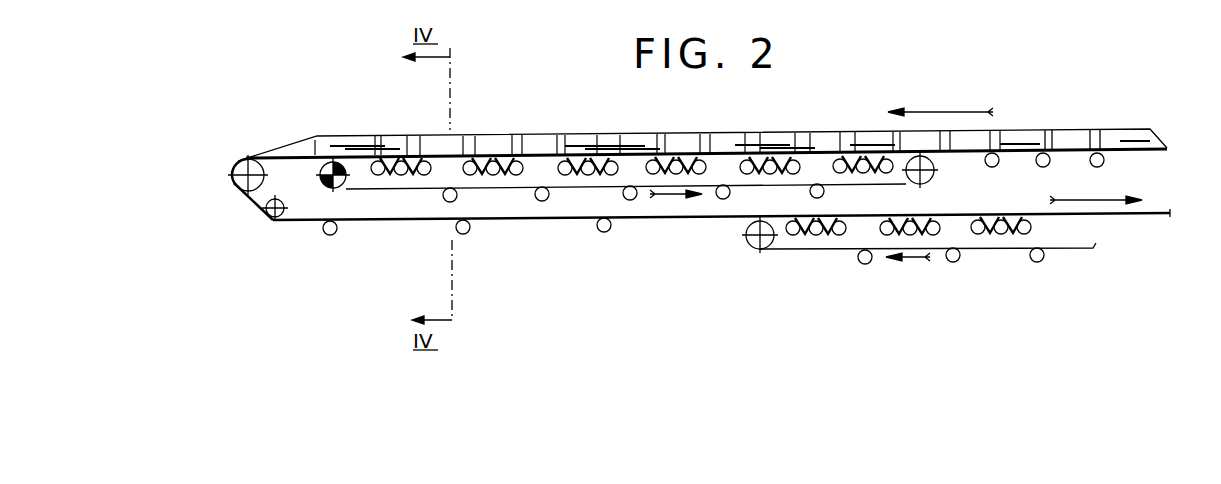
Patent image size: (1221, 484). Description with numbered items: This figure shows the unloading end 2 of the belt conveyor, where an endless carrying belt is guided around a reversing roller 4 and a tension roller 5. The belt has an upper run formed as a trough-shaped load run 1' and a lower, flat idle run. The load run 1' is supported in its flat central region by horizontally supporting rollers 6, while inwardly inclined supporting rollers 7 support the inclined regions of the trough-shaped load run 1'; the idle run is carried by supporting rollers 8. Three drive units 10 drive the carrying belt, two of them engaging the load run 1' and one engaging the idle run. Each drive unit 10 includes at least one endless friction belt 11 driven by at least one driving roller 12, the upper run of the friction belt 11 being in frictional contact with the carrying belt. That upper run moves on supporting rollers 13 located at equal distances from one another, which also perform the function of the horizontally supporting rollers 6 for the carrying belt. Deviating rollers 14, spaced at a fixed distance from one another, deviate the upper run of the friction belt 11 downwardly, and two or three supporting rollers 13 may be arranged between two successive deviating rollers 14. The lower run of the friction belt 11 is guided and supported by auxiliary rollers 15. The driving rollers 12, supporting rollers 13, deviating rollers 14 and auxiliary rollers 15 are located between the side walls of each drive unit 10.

The load run 1' is at (706, 124).
The unloading end 2 is at (309, 115).
The reversing roller 4 is at (254, 188).
The tension roller 5 is at (274, 220).
The horizontally supporting rollers 6 is at (1096, 188).
The inwardly inclined supporting rollers 7 is at (1100, 140).
The supporting rollers 8 is at (607, 232).
The drive unit 10 is at (940, 185).
The friction belt 11 is at (545, 155).
The driving roller 12 is at (320, 176).
The supporting rollers 13 is at (378, 152).
The deviating rollers 14 is at (405, 152).
The auxiliary rollers 15 is at (446, 197).